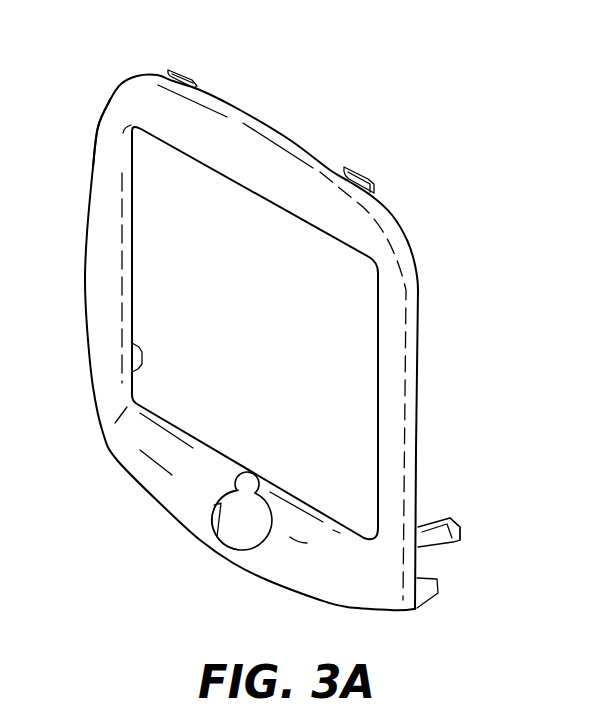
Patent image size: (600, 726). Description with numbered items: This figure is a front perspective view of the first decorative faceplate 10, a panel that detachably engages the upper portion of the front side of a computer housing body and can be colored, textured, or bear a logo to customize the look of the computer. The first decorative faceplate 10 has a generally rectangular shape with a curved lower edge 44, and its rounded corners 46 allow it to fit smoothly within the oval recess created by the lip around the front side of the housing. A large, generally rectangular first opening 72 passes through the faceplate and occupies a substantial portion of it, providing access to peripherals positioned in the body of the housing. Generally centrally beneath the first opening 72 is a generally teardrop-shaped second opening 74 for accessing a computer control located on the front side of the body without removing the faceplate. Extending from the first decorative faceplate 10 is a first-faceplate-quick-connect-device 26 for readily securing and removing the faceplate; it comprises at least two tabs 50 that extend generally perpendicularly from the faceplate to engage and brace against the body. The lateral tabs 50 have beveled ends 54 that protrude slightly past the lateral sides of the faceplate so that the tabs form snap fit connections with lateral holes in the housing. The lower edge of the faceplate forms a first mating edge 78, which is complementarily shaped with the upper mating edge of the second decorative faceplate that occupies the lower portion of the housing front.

The first decorative faceplate 10 is at (263, 167).
The first-faceplate-quick-connect-device 26 is at (172, 68).
The curved lower edge 44 is at (145, 495).
The rounded corners 46 is at (127, 97).
The tabs 50 is at (190, 80).
The beveled ends 54 is at (453, 523).
The first opening 72 is at (284, 357).
The second opening 74 is at (256, 532).
The first mating edge 78 is at (293, 590).